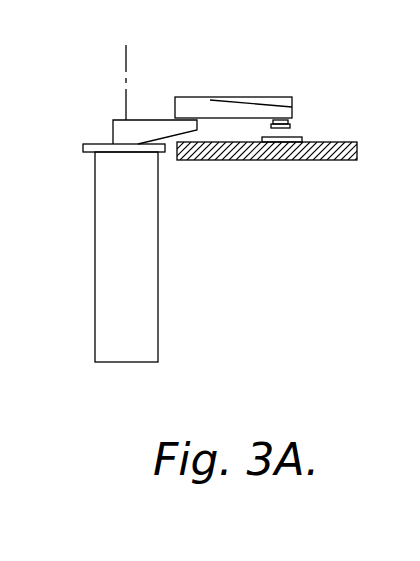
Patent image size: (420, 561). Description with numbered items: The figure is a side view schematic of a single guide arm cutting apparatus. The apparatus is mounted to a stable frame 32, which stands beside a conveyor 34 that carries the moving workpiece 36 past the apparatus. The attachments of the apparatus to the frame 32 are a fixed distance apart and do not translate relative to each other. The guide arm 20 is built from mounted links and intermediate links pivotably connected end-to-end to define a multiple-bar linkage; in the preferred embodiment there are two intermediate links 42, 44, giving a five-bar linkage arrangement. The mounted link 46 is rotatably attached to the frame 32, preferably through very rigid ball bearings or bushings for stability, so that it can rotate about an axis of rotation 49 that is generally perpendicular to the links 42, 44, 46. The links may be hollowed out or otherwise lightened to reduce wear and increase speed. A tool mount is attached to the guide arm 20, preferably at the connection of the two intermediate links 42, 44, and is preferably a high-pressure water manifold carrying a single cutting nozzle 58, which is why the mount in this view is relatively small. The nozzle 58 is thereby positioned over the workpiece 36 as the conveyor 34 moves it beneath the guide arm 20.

The guide arm 20 is at (232, 97).
The frame 32 is at (112, 275).
The conveyor 34 is at (333, 161).
The workpiece 36 is at (300, 137).
The intermediate link 42 is at (290, 97).
The intermediate link 44 is at (182, 111).
The mounted link 46 is at (113, 133).
The axis of rotation 49 is at (126, 72).
The jet nozzle 58 is at (292, 121).